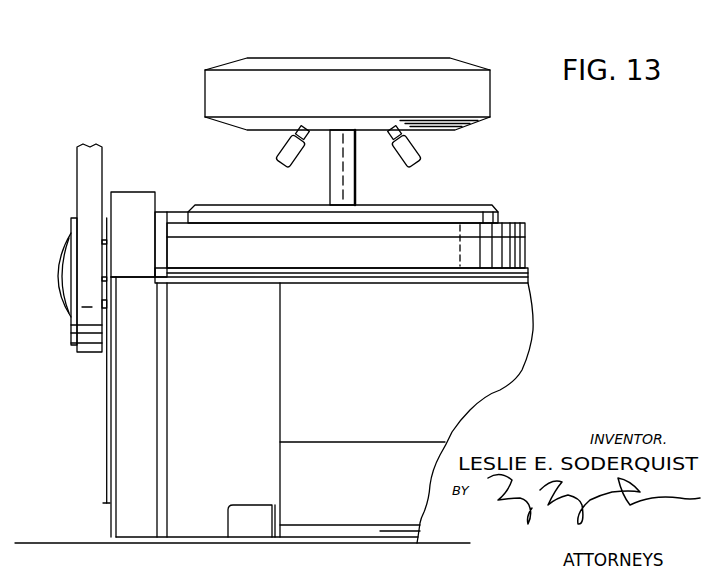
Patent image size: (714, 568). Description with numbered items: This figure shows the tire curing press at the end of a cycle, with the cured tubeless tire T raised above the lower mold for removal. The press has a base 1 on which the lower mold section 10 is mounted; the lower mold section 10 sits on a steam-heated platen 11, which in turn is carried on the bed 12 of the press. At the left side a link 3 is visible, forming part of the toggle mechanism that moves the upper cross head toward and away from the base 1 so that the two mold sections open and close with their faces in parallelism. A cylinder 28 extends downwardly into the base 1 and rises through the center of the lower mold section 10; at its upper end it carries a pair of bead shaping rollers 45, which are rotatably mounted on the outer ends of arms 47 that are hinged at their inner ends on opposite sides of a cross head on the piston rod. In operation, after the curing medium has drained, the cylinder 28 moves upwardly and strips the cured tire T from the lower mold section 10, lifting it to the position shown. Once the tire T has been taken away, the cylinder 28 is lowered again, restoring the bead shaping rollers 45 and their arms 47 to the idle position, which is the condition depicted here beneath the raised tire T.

The tubeless tire T is at (468, 75).
The arms 47 is at (290, 135).
The bead shaping rollers 45 is at (286, 166).
The cylinder 28 is at (347, 188).
The lower mold section 10 is at (498, 213).
The steam-heated platen 11 is at (526, 231).
The bed 12 is at (528, 280).
The link 3 is at (96, 185).
The base 1 is at (515, 333).